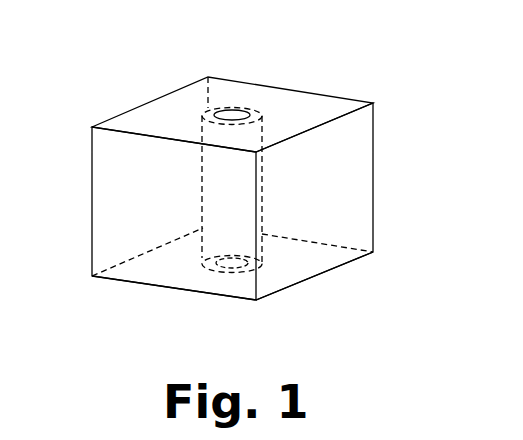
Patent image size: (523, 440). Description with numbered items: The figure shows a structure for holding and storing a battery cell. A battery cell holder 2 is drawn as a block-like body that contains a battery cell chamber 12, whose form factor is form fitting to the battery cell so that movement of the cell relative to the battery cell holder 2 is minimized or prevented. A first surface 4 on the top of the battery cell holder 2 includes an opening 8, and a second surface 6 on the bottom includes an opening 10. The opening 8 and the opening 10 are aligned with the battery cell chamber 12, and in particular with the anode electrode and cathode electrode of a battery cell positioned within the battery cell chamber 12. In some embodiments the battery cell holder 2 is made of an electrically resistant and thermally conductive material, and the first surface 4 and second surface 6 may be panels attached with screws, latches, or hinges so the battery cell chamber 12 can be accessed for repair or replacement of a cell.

The battery cell holder 2 is at (373, 152).
The first surface 4 is at (312, 107).
The second surface 6 is at (295, 252).
The opening 8 is at (236, 106).
The opening 10 is at (232, 268).
The battery cell chamber 12 is at (202, 175).